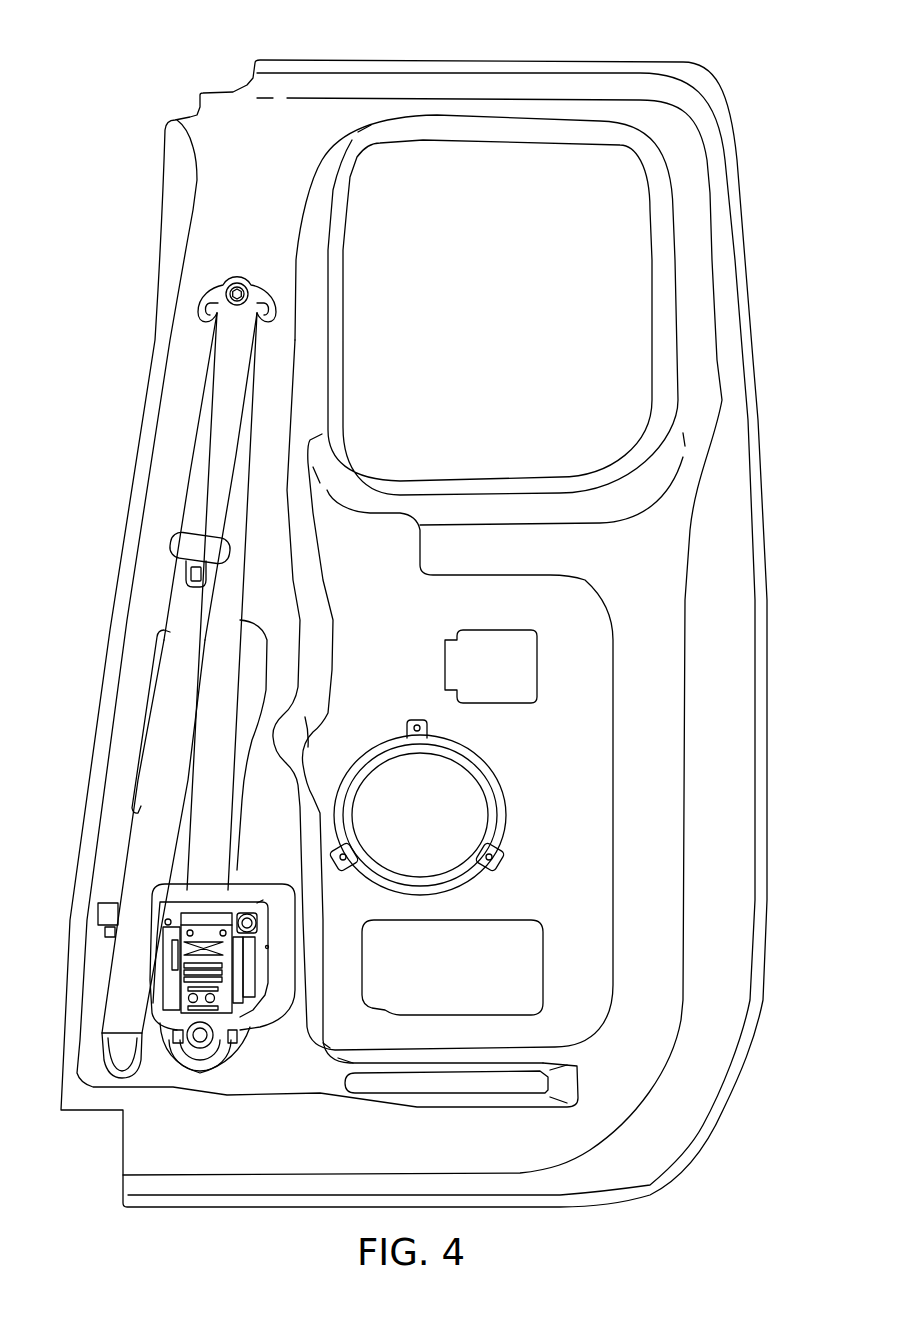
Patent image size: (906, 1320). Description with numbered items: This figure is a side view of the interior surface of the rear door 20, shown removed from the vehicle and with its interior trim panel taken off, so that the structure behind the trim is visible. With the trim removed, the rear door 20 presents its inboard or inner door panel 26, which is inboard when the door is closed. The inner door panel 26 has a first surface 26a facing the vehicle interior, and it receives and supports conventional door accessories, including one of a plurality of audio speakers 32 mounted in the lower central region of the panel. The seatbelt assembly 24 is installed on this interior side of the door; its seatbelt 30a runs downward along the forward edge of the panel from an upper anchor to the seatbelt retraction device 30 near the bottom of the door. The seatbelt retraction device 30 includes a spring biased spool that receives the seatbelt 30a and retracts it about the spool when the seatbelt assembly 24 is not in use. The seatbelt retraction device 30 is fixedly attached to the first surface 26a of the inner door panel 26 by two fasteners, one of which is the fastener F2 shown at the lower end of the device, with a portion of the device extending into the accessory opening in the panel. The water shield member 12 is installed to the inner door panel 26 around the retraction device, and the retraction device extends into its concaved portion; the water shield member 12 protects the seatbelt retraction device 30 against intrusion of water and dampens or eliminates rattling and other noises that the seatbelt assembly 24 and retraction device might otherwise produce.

The rear door 20 is at (668, 33).
The seatbelt assembly 24 is at (170, 602).
The seatbelt 30a is at (170, 723).
The inner door panel 26 is at (570, 727).
The first surface 26a is at (657, 827).
The audio speaker 32 is at (448, 798).
The water shield member 12 is at (275, 1002).
The seatbelt retraction device 30 is at (220, 1002).
The fastener F2 is at (192, 1045).